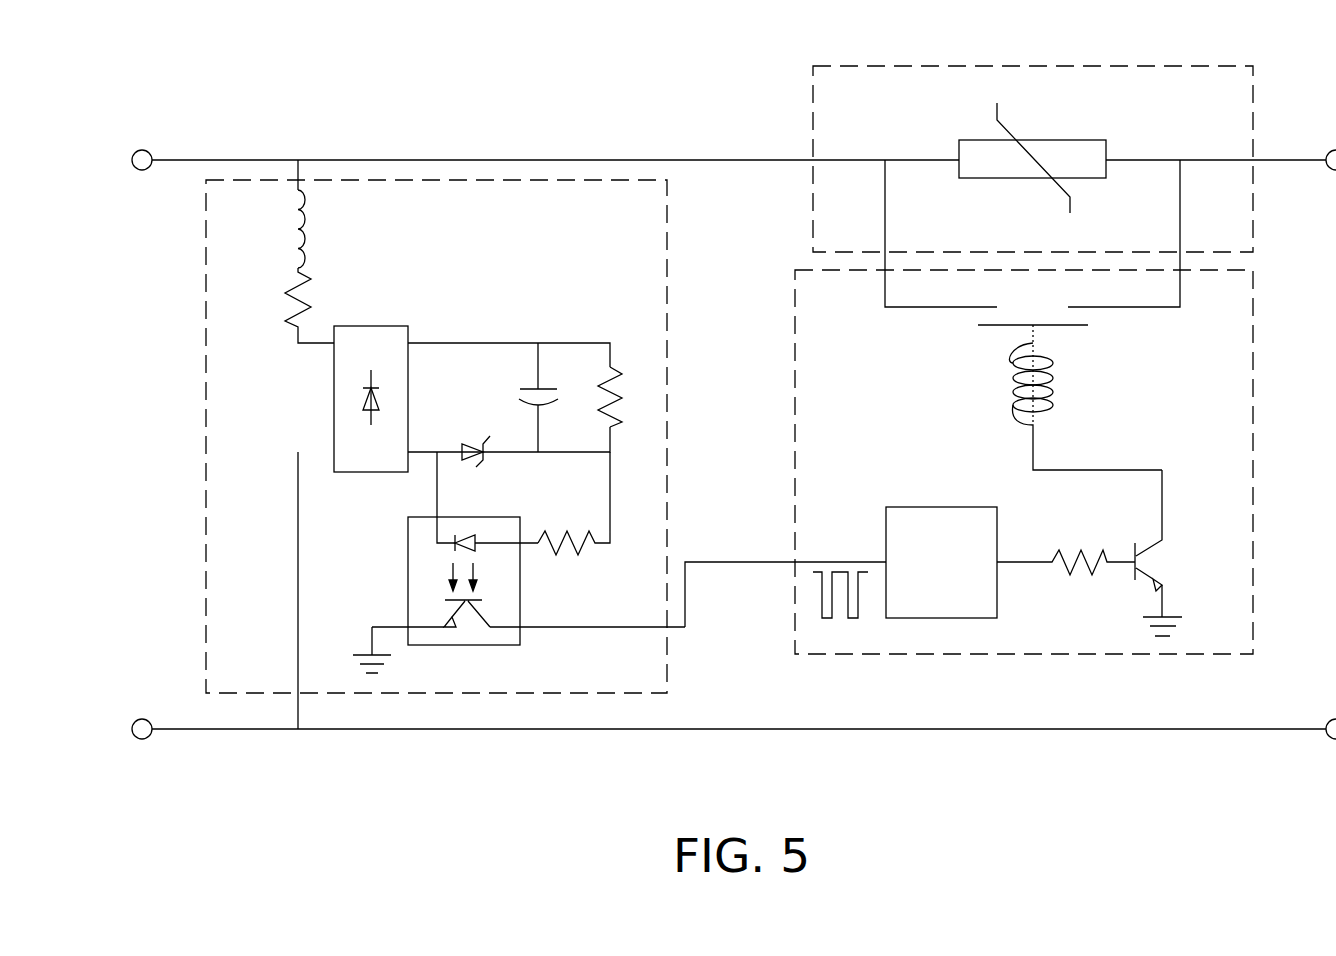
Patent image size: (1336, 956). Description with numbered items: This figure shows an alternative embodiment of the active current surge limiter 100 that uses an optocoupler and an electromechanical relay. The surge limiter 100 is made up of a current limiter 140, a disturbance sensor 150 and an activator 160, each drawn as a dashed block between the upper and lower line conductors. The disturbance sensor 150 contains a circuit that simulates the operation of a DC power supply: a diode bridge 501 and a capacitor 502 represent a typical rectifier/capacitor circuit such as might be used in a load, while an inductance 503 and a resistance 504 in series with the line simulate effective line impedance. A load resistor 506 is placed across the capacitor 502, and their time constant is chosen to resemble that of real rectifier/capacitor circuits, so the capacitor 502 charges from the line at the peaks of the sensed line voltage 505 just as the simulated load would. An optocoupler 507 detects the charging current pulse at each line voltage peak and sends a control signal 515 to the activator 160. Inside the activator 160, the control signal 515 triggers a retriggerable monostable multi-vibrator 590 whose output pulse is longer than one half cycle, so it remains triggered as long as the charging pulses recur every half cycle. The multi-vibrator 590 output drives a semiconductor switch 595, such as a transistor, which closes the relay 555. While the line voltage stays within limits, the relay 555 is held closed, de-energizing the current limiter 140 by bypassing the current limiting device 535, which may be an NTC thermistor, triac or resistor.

The active current surge limiter 100 is at (548, 60).
The current limiter 140 is at (1033, 159).
The disturbance sensor 150 is at (436, 436).
The activator 160 is at (1024, 462).
The diode bridge 501 is at (379, 326).
The capacitor 502 is at (530, 389).
The inductance 503 is at (306, 214).
The resistance 504 is at (298, 296).
The sensed line voltage 505 is at (302, 191).
The load resistor 506 is at (626, 386).
The optocoupler 507 is at (408, 563).
The control signal 515 is at (777, 562).
The current limiting device 535 is at (1070, 140).
The relay 555 is at (984, 346).
The retriggerable monostable multi-vibrator 590 is at (963, 577).
The semiconductor switch 595 is at (1185, 560).